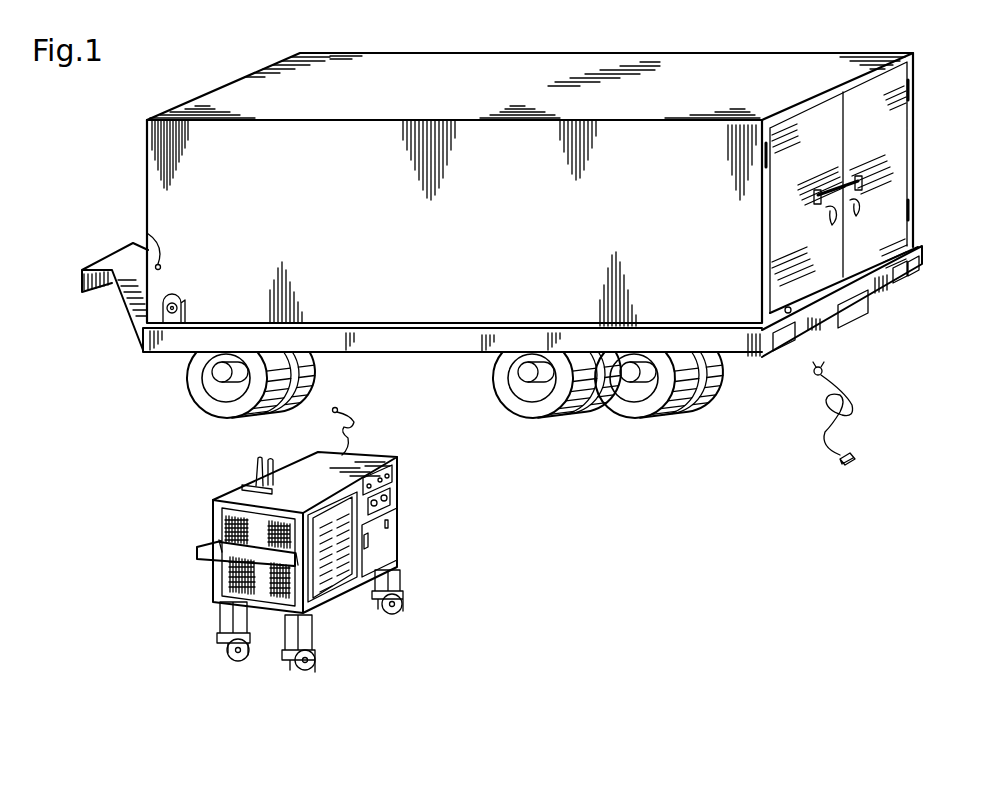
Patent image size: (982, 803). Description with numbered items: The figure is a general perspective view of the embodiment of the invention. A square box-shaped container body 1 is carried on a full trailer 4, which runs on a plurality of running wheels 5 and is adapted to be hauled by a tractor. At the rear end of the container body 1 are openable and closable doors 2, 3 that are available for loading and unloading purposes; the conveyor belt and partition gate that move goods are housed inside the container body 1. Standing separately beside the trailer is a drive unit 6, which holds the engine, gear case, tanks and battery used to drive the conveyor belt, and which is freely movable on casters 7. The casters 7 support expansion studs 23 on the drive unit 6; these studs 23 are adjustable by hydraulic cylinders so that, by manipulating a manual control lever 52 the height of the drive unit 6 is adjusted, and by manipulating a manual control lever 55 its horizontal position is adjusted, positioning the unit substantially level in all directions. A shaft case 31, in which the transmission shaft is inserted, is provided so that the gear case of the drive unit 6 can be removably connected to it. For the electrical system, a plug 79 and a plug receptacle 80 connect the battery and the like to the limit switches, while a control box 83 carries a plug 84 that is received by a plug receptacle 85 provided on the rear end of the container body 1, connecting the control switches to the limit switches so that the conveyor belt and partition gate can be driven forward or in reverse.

The container body 1 is at (747, 60).
The door 2 is at (817, 278).
The door 3 is at (900, 187).
The full trailer 4 is at (430, 347).
The running wheel 5 is at (197, 400).
The drive unit 6 is at (388, 511).
The caster 7 is at (242, 658).
The expansion stud 23 is at (220, 633).
The shaft case 31 is at (160, 307).
The manual control lever 52 is at (259, 456).
The manual control lever 55 is at (282, 451).
The plug 79 is at (338, 408).
The plug receptacle 80 is at (147, 231).
The control box 83 is at (858, 463).
The plug 84 is at (817, 376).
The plug receptacle 85 is at (791, 313).